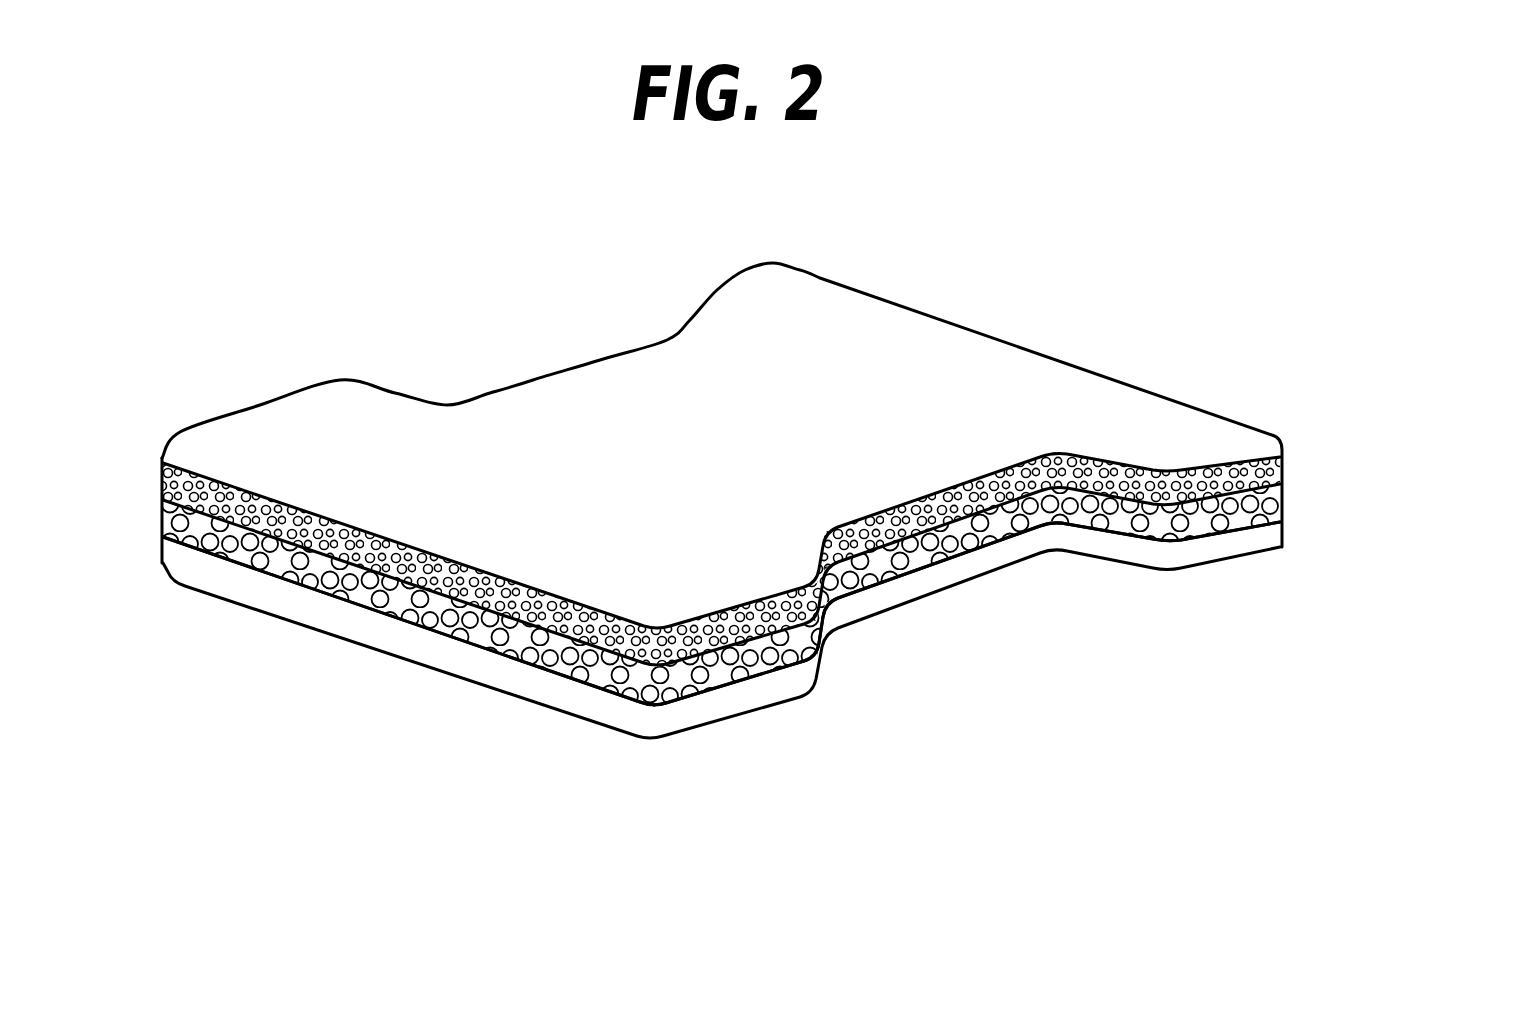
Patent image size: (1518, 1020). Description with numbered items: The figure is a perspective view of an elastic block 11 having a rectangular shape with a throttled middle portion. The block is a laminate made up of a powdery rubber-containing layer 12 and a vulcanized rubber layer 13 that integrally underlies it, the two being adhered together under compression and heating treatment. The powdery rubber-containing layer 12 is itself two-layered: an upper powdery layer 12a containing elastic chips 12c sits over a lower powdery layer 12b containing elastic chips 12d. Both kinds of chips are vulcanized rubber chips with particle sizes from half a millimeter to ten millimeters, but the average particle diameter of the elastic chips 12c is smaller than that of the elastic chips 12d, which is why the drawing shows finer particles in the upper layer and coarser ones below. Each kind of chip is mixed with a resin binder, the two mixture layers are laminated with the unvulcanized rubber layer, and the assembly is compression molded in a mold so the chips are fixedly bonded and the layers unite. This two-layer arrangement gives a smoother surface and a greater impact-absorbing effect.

The elastic block 11 is at (933, 280).
The powdery rubber-containing layer 12 is at (1412, 405).
The upper powdery layer 12a is at (788, 481).
The lower powdery layer 12b is at (788, 597).
The elastic chips 12c is at (1060, 460).
The elastic chips 12d is at (963, 533).
The vulcanized rubber layer 13 is at (1233, 552).